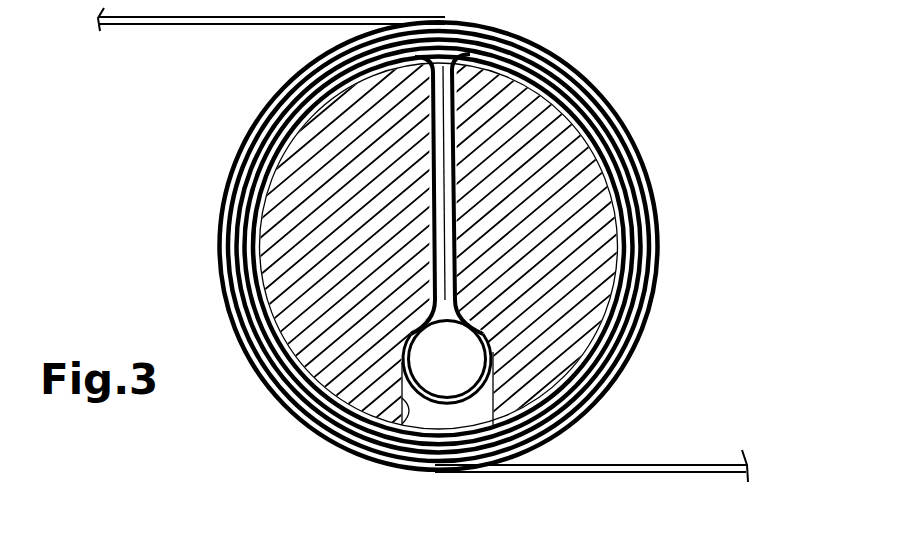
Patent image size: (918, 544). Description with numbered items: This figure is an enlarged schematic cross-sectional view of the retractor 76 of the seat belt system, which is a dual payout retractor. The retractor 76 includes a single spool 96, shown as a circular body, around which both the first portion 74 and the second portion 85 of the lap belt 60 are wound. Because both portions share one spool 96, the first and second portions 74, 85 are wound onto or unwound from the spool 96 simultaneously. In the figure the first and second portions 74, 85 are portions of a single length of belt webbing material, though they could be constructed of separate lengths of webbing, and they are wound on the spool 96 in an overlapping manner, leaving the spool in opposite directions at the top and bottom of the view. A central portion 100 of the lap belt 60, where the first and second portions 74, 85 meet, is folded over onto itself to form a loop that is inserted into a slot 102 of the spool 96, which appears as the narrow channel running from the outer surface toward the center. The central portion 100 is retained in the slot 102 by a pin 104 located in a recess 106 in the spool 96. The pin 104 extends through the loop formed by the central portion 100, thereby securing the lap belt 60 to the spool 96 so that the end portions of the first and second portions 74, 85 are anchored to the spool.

The lap belt 60 is at (422, 475).
The first portion of the lap belt 74 is at (670, 465).
The retractor 76 is at (160, 253).
The second portion of the lap belt 85 is at (197, 24).
The spool 96 is at (573, 165).
The central portion of the lap belt 100 is at (442, 182).
The slot 102 is at (460, 232).
The pin 104 is at (455, 357).
The recess 106 is at (332, 440).